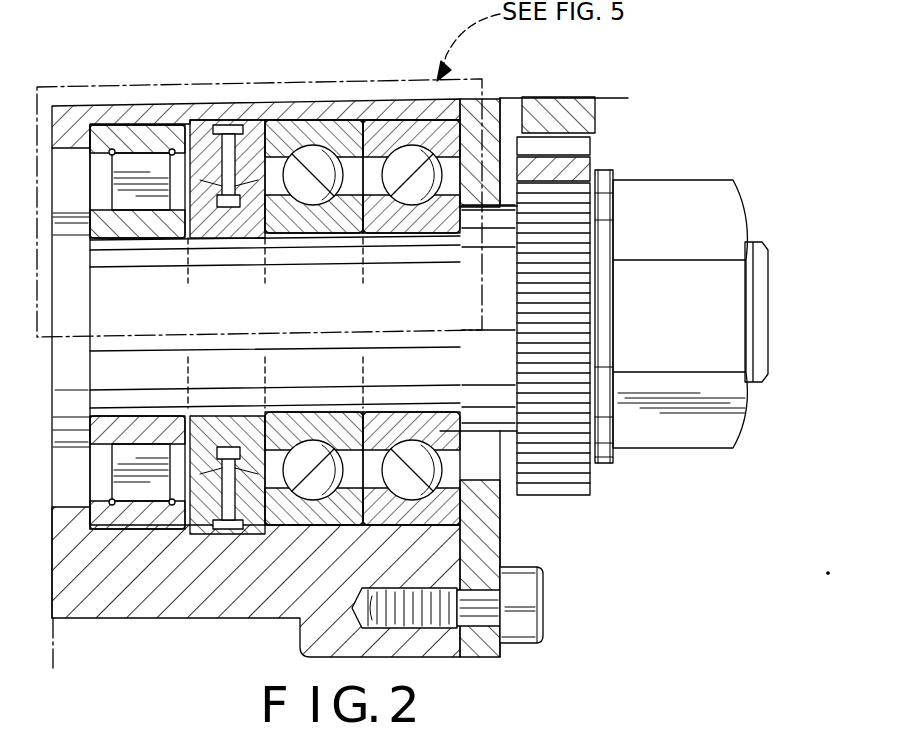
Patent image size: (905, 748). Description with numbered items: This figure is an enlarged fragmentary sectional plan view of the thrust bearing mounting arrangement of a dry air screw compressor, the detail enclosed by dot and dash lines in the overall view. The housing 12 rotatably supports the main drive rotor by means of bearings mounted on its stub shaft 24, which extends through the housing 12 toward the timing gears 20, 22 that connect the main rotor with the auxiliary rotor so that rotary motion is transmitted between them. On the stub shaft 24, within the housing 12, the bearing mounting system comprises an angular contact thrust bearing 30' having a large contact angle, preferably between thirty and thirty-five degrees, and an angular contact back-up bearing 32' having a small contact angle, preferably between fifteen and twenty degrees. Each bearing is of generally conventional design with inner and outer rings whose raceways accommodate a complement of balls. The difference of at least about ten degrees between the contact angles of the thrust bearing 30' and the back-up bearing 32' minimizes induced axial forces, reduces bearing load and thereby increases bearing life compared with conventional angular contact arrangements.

The housing 12 is at (193, 597).
The timing gear 20 is at (585, 497).
The timing gear 22 is at (591, 113).
The stub shaft 24 is at (319, 314).
The angular contact thrust bearing 30' is at (314, 280).
The angular contact back-up bearing 32' is at (449, 281).